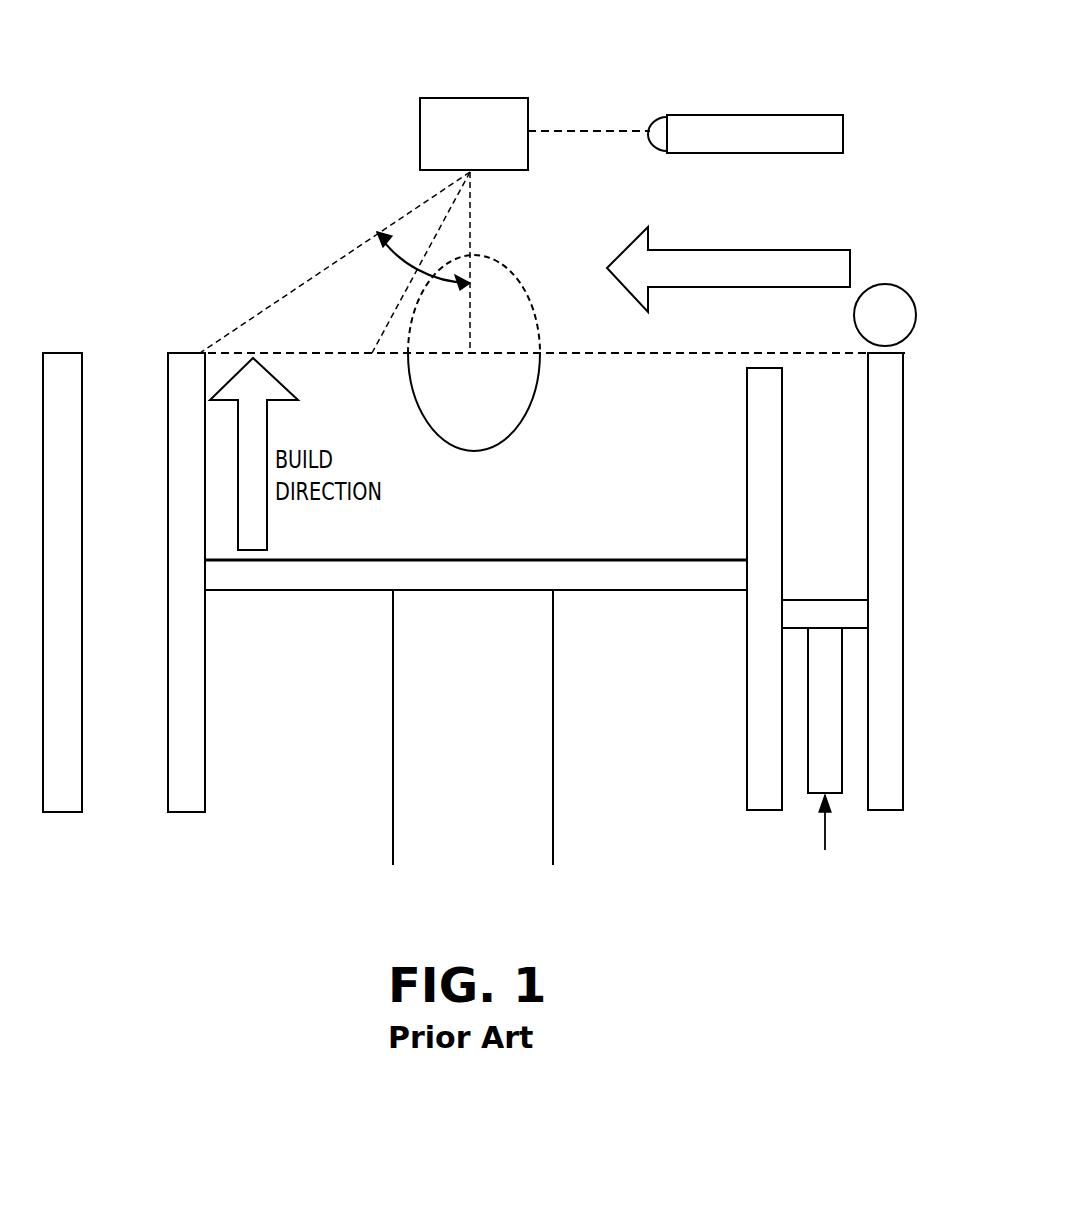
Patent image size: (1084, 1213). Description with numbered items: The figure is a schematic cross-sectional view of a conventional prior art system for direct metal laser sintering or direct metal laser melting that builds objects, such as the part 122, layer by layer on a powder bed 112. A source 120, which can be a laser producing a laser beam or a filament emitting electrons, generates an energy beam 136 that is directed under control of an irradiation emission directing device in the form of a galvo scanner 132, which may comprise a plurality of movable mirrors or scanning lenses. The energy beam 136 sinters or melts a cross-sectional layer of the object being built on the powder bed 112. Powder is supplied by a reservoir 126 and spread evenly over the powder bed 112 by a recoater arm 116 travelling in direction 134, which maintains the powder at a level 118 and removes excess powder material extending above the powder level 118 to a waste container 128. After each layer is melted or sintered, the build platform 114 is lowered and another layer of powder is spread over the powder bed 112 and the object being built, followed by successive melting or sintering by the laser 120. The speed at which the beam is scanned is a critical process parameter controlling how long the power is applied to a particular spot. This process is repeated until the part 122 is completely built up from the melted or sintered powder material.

The powder bed 112 is at (617, 372).
The build platform 114 is at (692, 558).
The recoater arm 116 is at (885, 285).
The powder level 118 is at (265, 356).
The source 120 is at (697, 113).
The part 122 is at (408, 418).
The reservoir 126 is at (843, 470).
The waste container 128 is at (150, 690).
The galvo scanner 132 is at (420, 132).
The direction 134 is at (622, 248).
The energy beam 136 is at (392, 234).